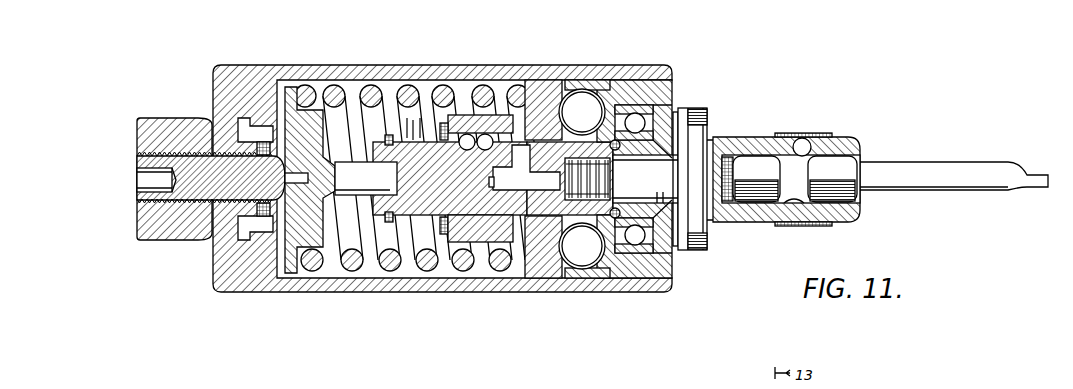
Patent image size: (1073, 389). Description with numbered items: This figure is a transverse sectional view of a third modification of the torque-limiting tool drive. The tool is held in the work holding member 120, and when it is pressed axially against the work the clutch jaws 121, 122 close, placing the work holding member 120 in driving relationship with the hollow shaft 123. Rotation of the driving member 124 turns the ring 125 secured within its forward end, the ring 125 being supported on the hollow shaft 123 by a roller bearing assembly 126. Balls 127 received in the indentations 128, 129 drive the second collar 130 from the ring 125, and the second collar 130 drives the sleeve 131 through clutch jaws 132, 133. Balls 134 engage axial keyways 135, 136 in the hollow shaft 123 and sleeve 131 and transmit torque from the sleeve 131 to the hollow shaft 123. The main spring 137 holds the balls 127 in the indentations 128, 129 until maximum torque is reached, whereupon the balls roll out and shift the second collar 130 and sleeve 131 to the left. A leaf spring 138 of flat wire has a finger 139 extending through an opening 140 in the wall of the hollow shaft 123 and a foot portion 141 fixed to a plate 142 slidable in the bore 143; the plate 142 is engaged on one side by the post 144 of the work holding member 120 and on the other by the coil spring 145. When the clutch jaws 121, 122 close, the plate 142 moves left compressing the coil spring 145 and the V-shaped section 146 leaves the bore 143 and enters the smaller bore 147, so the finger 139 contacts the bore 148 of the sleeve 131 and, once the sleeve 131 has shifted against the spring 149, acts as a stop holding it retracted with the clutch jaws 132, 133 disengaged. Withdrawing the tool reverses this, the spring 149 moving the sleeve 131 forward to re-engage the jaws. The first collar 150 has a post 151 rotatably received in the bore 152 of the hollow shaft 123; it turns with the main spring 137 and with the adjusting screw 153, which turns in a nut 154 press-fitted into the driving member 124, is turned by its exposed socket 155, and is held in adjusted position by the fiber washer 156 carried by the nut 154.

The work holding member 120 is at (845, 140).
The clutch jaw 121 is at (708, 117).
The clutch jaw 122 is at (677, 114).
The hollow shaft 123 is at (478, 230).
The driving member 124 is at (222, 89).
The ring 125 is at (646, 270).
The roller bearing assembly 126 is at (658, 272).
The balls 127 is at (583, 97).
The indentation 128 is at (597, 82).
The indentation 129 is at (572, 88).
The second collar 130 is at (540, 128).
The sleeve 131 is at (472, 123).
The clutch jaw 132 is at (500, 117).
The clutch jaw 133 is at (533, 112).
The balls 134 is at (462, 120).
The axial keyway 135 is at (450, 157).
The axial keyway 136 is at (448, 133).
The main spring 137 is at (317, 262).
The leaf spring 138 is at (535, 183).
The finger 139 is at (505, 153).
The opening 140 is at (530, 160).
The foot portion 141 is at (612, 163).
The plate 142 is at (612, 186).
The bore 143 is at (670, 243).
The post 144 is at (678, 158).
The coil spring 145 is at (612, 222).
The V-shaped section 146 is at (555, 200).
The smaller bore 147 is at (495, 224).
The bore 148 is at (468, 212).
The spring 149 is at (408, 98).
The first collar 150 is at (290, 93).
The post 151 is at (366, 178).
The bore 152 is at (417, 198).
The adjusting screw 153 is at (183, 188).
The nut 154 is at (240, 122).
The socket 155 is at (143, 180).
The fiber washer 156 is at (267, 220).